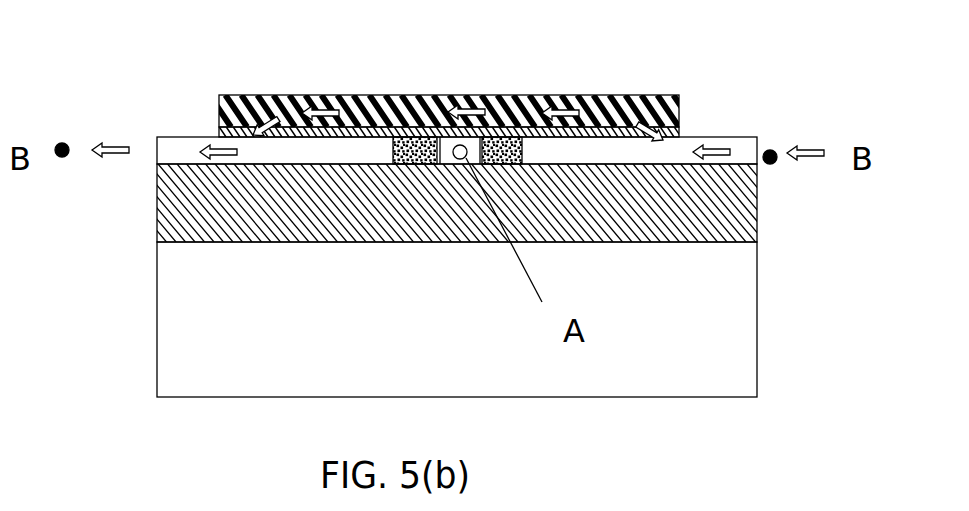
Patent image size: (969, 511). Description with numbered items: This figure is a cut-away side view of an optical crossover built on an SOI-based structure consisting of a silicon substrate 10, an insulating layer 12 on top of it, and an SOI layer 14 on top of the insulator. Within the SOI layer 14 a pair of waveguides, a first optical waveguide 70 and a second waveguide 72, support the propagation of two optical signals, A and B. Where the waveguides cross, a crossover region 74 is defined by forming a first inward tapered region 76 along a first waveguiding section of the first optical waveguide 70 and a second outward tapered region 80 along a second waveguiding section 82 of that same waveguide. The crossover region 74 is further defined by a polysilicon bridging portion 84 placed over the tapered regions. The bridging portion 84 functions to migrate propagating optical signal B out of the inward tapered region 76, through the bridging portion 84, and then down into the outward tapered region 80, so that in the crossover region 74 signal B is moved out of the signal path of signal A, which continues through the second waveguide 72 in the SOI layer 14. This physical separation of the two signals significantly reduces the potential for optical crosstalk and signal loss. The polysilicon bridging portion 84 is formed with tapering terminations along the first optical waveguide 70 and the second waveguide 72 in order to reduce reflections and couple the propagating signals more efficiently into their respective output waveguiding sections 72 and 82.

The silicon substrate 10 is at (728, 331).
The insulating layer 12 is at (736, 226).
The SOI layer 14 is at (746, 150).
The first optical waveguide 70 is at (692, 138).
The second waveguide 72 is at (447, 156).
The crossover region 74 is at (529, 90).
The first inward tapered region 76 is at (557, 147).
The second outward tapered region 80 is at (347, 95).
The second waveguiding section 82 is at (182, 135).
The polysilicon bridging portion 84 is at (242, 95).